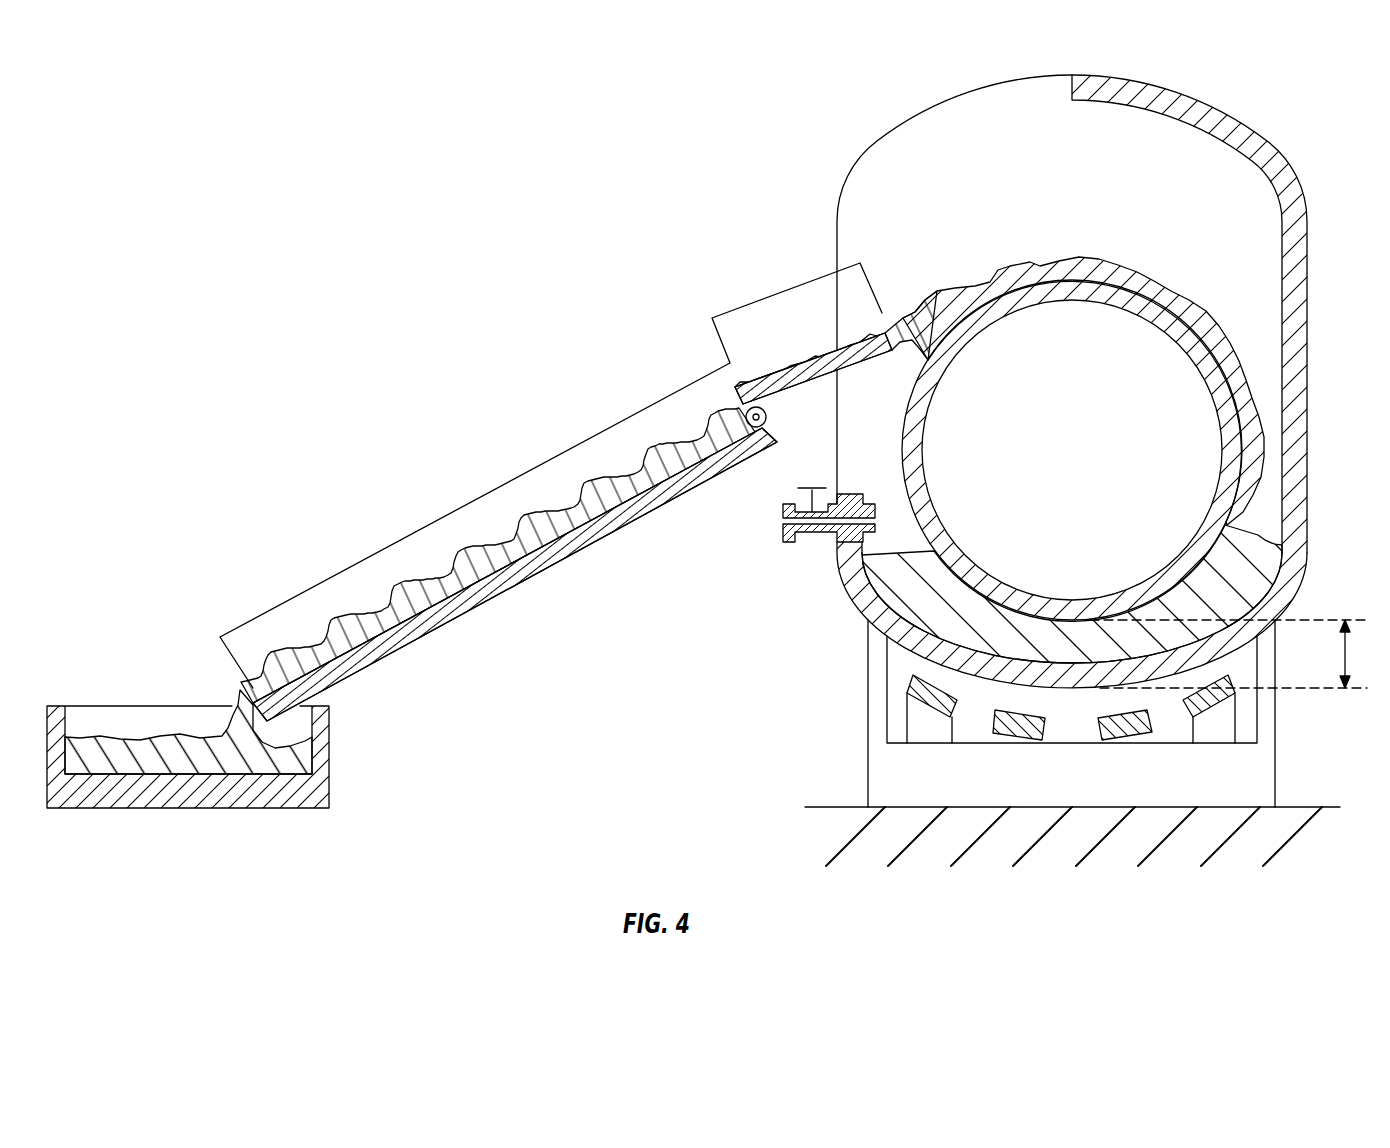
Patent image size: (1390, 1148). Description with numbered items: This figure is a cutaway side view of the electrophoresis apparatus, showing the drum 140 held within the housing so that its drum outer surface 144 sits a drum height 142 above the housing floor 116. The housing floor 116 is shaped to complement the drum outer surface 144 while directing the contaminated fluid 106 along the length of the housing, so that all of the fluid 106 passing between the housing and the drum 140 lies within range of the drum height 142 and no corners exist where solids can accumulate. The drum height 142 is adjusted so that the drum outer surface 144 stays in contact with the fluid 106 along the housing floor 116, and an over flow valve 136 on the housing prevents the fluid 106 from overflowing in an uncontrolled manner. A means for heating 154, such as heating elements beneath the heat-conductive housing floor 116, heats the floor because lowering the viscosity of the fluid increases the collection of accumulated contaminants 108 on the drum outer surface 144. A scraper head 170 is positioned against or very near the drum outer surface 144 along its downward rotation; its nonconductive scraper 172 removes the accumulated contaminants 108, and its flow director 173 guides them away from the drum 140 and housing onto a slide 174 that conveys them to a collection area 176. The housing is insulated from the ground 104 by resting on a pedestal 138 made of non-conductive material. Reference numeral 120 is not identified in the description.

The ground 104 is at (1328, 806).
The contaminated fluid 106 is at (1287, 557).
The accumulated contaminants 108 is at (1157, 283).
The housing floor 116 is at (1010, 678).
The housing cover 120 is at (1230, 134).
The over flow valve 136 is at (812, 488).
The pedestal 138 is at (1277, 738).
The drum 140 is at (1212, 378).
The drum height 142 is at (1228, 654).
The drum outer surface 144 is at (894, 448).
The means for heating 154 is at (933, 697).
The scraper head 170 is at (775, 282).
The scraper 172 is at (922, 316).
The flow director 173 is at (806, 377).
The slide 174 is at (508, 568).
The collection area 176 is at (104, 706).